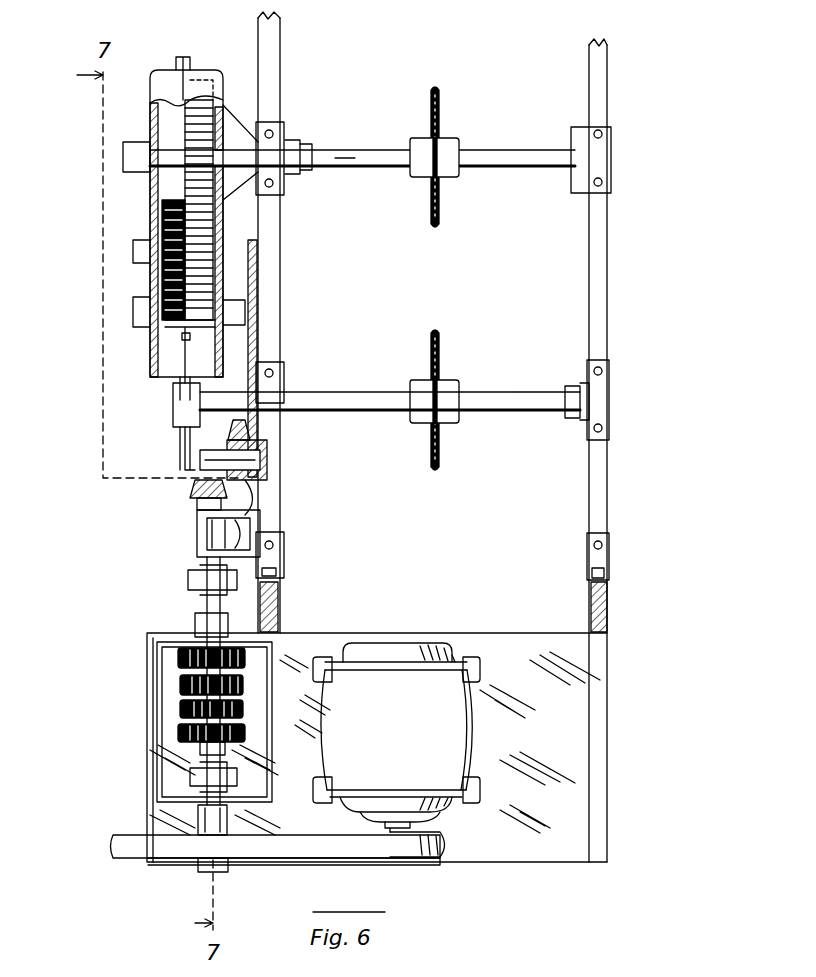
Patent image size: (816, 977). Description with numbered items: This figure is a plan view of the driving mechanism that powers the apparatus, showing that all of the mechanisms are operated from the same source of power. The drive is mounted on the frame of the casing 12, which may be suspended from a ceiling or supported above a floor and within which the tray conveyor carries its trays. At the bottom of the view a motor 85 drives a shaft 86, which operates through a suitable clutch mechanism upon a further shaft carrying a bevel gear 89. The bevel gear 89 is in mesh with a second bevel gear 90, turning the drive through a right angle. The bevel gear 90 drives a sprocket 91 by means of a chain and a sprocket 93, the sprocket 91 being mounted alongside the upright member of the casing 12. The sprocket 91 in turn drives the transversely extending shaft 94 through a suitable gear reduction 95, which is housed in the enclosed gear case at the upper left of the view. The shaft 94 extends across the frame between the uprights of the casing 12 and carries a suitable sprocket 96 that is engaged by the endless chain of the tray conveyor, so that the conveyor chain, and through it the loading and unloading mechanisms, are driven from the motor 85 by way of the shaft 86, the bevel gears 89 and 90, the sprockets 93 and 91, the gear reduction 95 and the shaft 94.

The casing 12 is at (603, 300).
The transversely extending shaft 94 is at (375, 160).
The sprocket 96 is at (440, 112).
The gear reduction 95 is at (163, 278).
The sprocket 91 is at (256, 297).
The sprocket 93 is at (265, 436).
The bevel gear 89 is at (195, 490).
The bevel gear 90 is at (245, 498).
The shaft 86 is at (210, 757).
The motor 85 is at (453, 763).